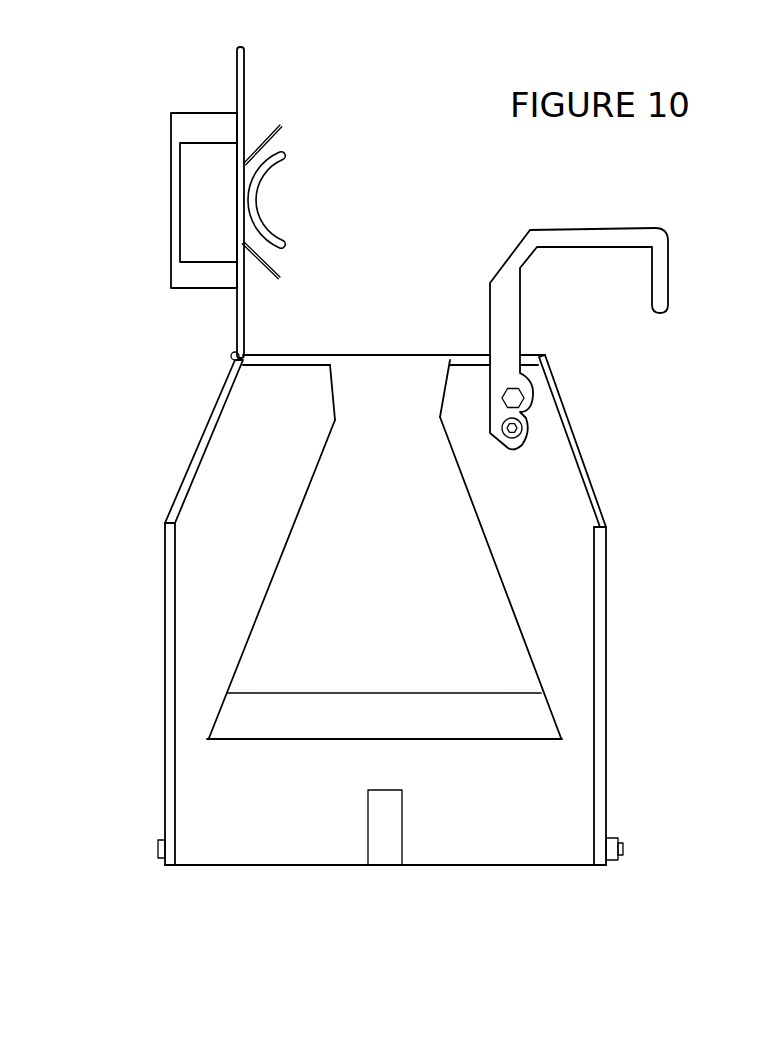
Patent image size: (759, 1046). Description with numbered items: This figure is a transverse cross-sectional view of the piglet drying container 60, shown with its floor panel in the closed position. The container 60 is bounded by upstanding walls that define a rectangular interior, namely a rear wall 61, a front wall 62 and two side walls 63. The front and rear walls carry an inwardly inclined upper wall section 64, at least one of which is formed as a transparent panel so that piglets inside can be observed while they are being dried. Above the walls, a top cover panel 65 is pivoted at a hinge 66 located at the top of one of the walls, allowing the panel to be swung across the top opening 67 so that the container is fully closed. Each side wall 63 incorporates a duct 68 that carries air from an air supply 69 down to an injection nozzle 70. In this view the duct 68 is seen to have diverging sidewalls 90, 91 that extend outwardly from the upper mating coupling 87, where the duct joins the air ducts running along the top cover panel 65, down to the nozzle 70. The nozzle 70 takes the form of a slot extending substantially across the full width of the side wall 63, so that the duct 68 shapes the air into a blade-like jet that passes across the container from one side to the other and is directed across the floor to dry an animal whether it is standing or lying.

The container 60 is at (387, 552).
The rear wall 61 is at (606, 695).
The front wall 62 is at (165, 686).
The side wall 63 is at (246, 567).
The inwardly inclined upper wall section 64 is at (190, 446).
The top cover panel 65 is at (241, 77).
The hinge 66 is at (230, 354).
The top opening 67 is at (380, 330).
The duct 68 is at (384, 548).
The air supply 69 is at (187, 201).
The injection nozzle 70 is at (395, 733).
The mating coupling 87 is at (383, 357).
The diverging sidewall 90 is at (267, 595).
The diverging sidewall 91 is at (505, 607).